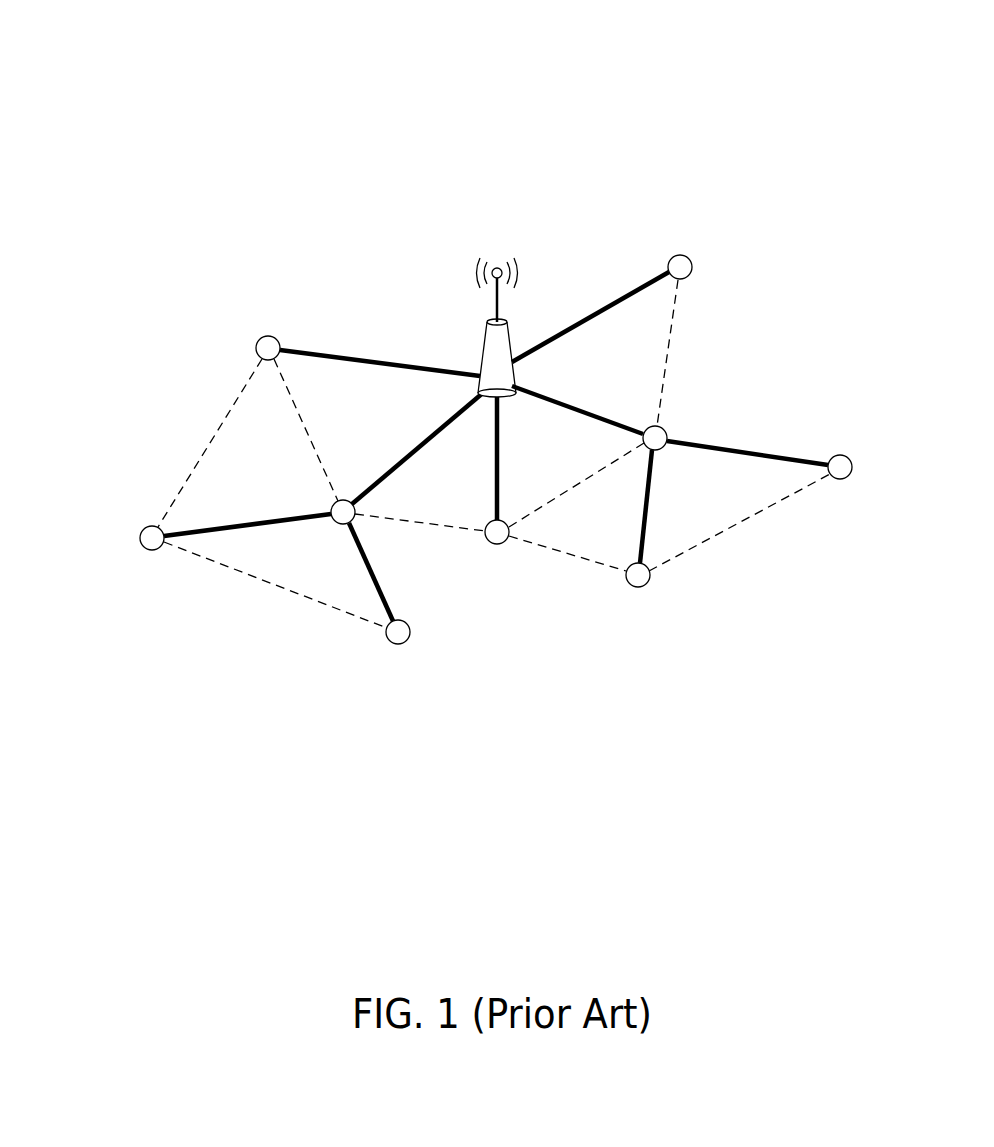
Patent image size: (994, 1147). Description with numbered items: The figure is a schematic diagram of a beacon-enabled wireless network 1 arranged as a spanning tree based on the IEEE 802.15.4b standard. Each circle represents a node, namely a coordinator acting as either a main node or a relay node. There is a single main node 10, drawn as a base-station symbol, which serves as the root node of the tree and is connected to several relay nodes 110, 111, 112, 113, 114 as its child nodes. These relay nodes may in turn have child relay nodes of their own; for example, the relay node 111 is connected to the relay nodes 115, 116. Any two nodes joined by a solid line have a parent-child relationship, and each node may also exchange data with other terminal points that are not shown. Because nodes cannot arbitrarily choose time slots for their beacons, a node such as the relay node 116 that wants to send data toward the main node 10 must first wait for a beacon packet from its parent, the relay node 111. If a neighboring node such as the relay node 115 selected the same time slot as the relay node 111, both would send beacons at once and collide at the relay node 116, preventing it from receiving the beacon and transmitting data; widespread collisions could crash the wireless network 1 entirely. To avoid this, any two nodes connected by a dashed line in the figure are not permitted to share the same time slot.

The wireless network 1 is at (418, 78).
The main node 10 is at (482, 345).
The relay node 110 is at (258, 338).
The relay node 111 is at (355, 520).
The relay node 112 is at (497, 546).
The relay node 113 is at (693, 266).
The relay node 114 is at (667, 432).
The relay node 115 is at (140, 530).
The relay node 116 is at (400, 645).